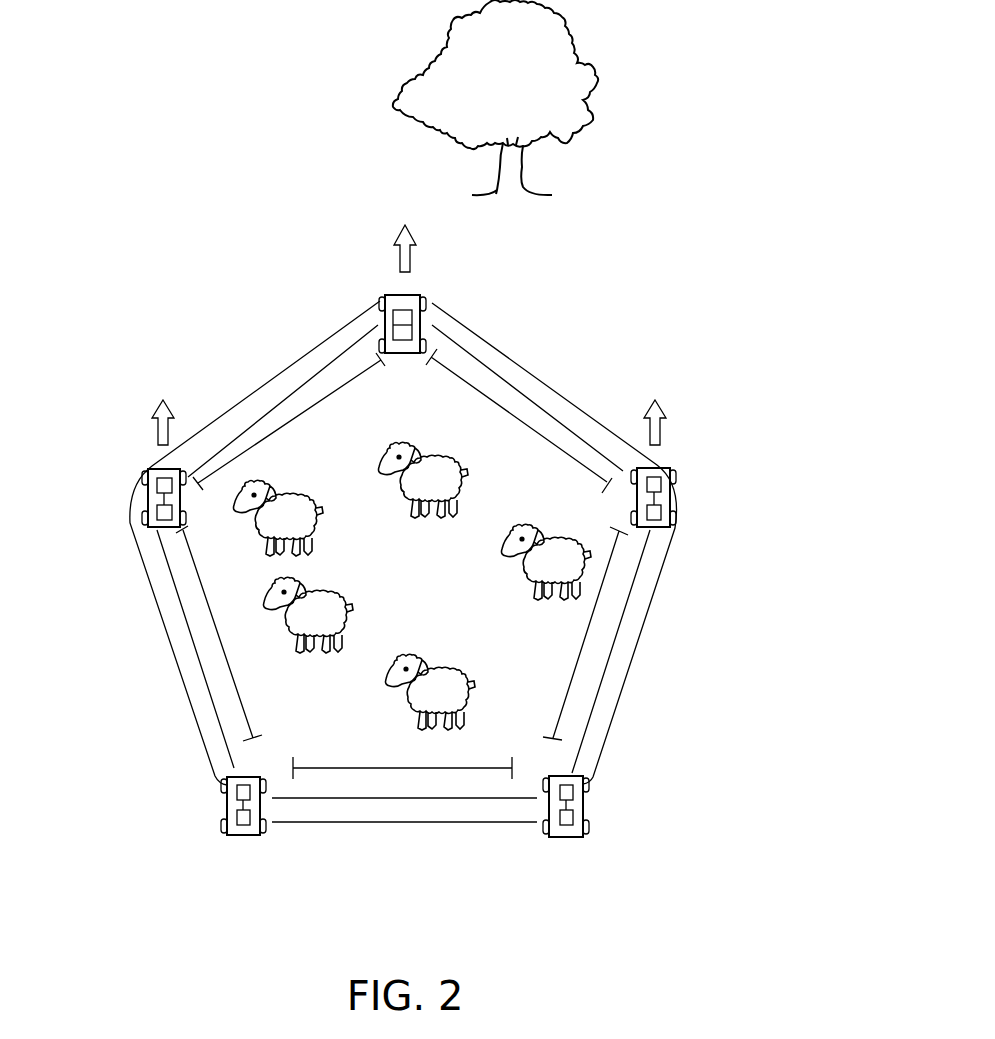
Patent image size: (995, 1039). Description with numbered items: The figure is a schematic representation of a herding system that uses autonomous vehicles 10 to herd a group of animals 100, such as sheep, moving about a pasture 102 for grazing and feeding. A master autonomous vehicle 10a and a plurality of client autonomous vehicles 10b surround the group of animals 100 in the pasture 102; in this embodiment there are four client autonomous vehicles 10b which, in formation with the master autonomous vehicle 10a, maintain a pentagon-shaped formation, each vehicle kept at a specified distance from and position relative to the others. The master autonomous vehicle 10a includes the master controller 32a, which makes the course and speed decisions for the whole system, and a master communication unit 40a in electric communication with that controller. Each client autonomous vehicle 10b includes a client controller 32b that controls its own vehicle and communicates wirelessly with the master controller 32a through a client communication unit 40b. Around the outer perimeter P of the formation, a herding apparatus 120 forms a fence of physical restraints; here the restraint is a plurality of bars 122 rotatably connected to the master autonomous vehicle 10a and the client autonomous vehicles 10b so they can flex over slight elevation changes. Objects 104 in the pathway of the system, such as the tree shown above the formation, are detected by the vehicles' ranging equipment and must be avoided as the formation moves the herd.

The object 104 is at (598, 87).
The herding apparatus 120 is at (327, 323).
The outer perimeter P is at (262, 381).
The bars 122 is at (237, 423).
The pasture 102 is at (453, 415).
The master autonomous vehicle 10a is at (418, 289).
The master controller 32a is at (408, 310).
The master communication unit 40a is at (422, 322).
The client autonomous vehicles 10b is at (395, 644).
The client controller 32b is at (157, 514).
The client communication units 40b is at (157, 485).
The autonomous vehicle 10 is at (705, 474).
The group of animals 100 is at (520, 635).